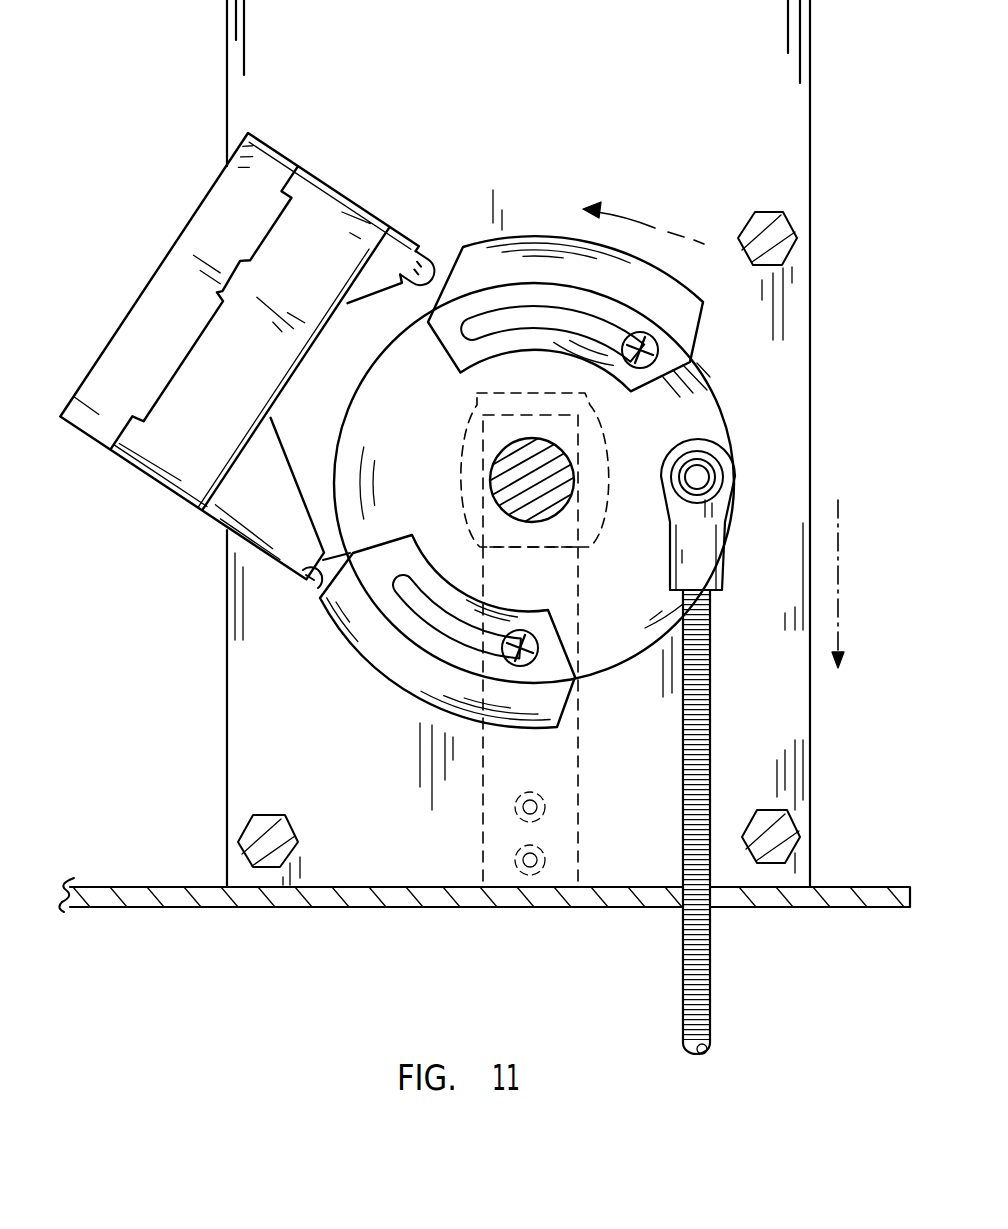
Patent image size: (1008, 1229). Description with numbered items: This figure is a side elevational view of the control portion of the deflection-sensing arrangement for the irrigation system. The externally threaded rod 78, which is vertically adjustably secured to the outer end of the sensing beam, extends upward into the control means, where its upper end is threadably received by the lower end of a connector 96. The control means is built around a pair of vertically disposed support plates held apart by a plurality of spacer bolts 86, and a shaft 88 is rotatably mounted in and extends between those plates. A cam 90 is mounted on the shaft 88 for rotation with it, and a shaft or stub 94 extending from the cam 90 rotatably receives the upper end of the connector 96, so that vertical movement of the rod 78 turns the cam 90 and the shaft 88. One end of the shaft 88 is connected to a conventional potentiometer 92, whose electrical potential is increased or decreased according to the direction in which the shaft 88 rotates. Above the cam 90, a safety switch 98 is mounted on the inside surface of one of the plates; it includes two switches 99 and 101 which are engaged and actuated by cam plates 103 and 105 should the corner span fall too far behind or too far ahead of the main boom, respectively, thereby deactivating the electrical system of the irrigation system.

The externally threaded rod 78 is at (682, 963).
The spacer bolts 86 is at (792, 825).
The shaft 88 is at (560, 507).
The cam 90 is at (700, 395).
The potentiometer 92 is at (610, 452).
The stub 94 is at (717, 473).
The connector 96 is at (712, 530).
The safety switch 98 is at (333, 190).
The switch 99 is at (430, 262).
The switch 101 is at (307, 588).
The cam plate 103 is at (533, 243).
The cam plate 105 is at (410, 668).